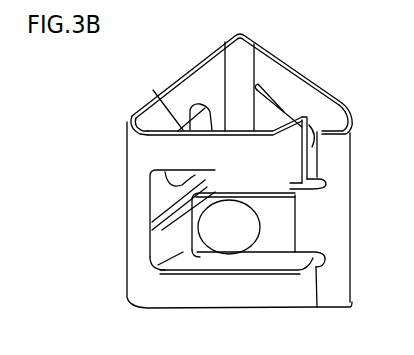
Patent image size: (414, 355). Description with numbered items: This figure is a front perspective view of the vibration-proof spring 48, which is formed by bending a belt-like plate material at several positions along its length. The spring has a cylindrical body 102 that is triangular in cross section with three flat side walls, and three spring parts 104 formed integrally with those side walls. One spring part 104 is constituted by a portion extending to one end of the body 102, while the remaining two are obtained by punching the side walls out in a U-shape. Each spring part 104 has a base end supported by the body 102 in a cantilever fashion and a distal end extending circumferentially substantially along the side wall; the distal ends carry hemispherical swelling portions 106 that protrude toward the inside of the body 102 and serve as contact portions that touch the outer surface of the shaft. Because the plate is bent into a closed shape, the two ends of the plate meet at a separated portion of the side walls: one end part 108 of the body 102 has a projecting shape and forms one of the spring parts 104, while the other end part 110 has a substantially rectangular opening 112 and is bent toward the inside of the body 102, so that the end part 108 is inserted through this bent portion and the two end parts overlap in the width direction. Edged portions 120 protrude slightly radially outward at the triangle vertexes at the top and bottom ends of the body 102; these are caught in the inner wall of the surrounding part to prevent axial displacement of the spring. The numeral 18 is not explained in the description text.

The connector 18 is at (291, 5).
The vibration-proof spring 48 is at (297, 54).
The cylindrical body 102 is at (202, 57).
The spring parts 104 is at (157, 183).
The swelling portions 106 is at (177, 128).
The end part 108 is at (208, 254).
The end part 110 is at (168, 298).
The opening 112 is at (154, 204).
The edged portions 120 is at (127, 122).